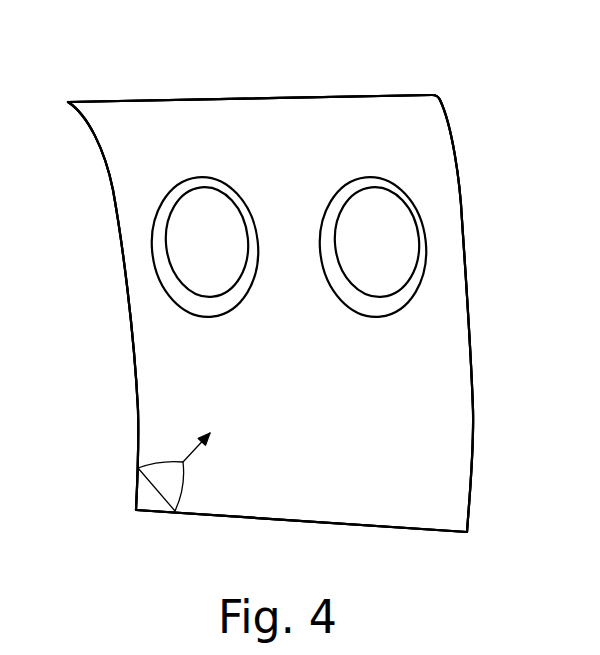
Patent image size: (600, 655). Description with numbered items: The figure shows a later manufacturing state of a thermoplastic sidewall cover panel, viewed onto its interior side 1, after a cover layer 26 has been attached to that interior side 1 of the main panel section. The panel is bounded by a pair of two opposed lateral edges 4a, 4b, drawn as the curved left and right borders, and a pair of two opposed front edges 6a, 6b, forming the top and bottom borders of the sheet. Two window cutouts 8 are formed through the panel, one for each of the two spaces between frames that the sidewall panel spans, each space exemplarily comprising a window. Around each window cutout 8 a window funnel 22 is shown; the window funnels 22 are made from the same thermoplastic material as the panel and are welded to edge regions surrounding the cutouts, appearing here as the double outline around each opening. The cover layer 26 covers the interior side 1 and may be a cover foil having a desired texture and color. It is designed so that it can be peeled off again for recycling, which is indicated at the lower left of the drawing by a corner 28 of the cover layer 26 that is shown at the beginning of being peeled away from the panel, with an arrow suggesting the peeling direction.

The interior side 1 is at (317, 150).
The front edge 6a is at (270, 97).
The front edge 6b is at (283, 522).
The lateral edge 4a is at (130, 302).
The lateral edge 4b is at (470, 320).
The window cutout 8 is at (402, 245).
The window funnel 22 is at (413, 292).
The cover layer 26 is at (420, 397).
The corner 28 is at (170, 480).